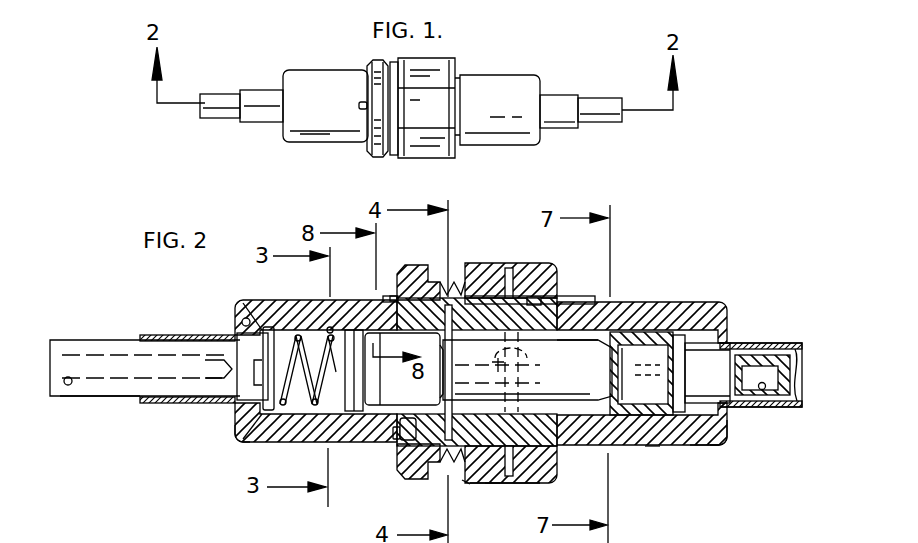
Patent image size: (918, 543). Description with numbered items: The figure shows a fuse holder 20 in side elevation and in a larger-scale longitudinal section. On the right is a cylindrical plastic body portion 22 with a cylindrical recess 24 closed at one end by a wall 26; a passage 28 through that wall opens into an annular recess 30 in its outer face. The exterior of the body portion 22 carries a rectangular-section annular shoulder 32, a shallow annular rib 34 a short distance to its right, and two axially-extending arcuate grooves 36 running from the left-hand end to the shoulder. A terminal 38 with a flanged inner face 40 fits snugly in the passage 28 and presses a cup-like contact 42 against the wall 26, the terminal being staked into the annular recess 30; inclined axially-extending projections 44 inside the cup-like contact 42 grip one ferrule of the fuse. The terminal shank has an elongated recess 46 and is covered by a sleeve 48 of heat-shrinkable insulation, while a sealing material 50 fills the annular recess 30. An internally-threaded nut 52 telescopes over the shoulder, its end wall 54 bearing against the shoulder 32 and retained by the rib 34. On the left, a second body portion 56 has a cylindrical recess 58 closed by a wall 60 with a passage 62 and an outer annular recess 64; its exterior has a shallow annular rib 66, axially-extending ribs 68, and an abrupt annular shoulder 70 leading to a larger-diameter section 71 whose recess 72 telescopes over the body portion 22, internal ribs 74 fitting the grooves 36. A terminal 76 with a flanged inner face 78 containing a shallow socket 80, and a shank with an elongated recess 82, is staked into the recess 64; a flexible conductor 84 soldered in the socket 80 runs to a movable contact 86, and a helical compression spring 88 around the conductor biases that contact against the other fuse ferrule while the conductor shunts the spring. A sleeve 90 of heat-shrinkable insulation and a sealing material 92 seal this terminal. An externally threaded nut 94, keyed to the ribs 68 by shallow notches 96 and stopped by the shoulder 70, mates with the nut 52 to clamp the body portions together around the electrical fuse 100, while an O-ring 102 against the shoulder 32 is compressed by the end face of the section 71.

In FIG. 1, the fuse holder 20 is at (498, 74).
In FIG. 2, the fuse holder 20 is at (672, 294).
In FIG. 1, the body portion 22 is at (511, 145).
In FIG. 2, the body portion 22 is at (712, 304).
In FIG. 2, the cylindrical recess 24 is at (588, 447).
In FIG. 2, the wall 26 is at (695, 447).
In FIG. 2, the passage 28 is at (729, 353).
In FIG. 2, the annular recess 30 is at (724, 440).
In FIG. 2, the annular shoulder 32 is at (498, 484).
In FIG. 1, the annular rib 34 is at (458, 100).
In FIG. 2, the annular rib 34 is at (565, 303).
In FIG. 2, the arcuate grooves 36 is at (514, 358).
In FIG. 1, the terminal 38 is at (616, 122).
In FIG. 2, the terminal 38 is at (707, 373).
In FIG. 2, the flanged inner face 40 is at (678, 448).
In FIG. 2, the cup-like contact 42 is at (625, 418).
In FIG. 2, the axially-extending projections 44 is at (652, 447).
In FIG. 2, the elongated recess 46 is at (766, 390).
In FIG. 1, the sleeve of heat-shrinkable insulation 48 is at (566, 95).
In FIG. 2, the sleeve of heat-shrinkable insulation 48 is at (800, 343).
In FIG. 2, the sealing material 50 is at (729, 350).
In FIG. 1, the internally-threaded nut 52 is at (420, 158).
In FIG. 2, the internally-threaded nut 52 is at (541, 265).
In FIG. 2, the end wall 54 is at (573, 298).
In FIG. 1, the body portion 56 is at (298, 136).
In FIG. 2, the body portion 56 is at (242, 446).
In FIG. 2, the cylindrical recess 58 is at (348, 330).
In FIG. 2, the wall 60 is at (238, 432).
In FIG. 2, the passage 62 is at (260, 308).
In FIG. 2, the annular recess 64 is at (240, 320).
In FIG. 1, the annular rib 66 is at (373, 62).
In FIG. 2, the annular rib 66 is at (398, 446).
In FIG. 1, the axially-extending ribs 68 is at (359, 105).
In FIG. 2, the axially-extending ribs 68 is at (393, 298).
In FIG. 2, the annular shoulder 70 is at (397, 478).
In FIG. 2, the larger-diameter section 71 is at (468, 485).
In FIG. 2, the larger-diameter cylindrical recess 72 is at (479, 265).
In FIG. 2, the axially-extending ribs 74 is at (527, 378).
In FIG. 1, the terminal 76 is at (208, 120).
In FIG. 2, the terminal 76 is at (252, 366).
In FIG. 2, the flanged inner face 78 is at (268, 415).
In FIG. 2, the shallow socket 80 is at (222, 370).
In FIG. 2, the elongated recess 82 is at (70, 386).
In FIG. 2, the flexible conductor 84 is at (308, 420).
In FIG. 2, the movable contact 86 is at (351, 415).
In FIG. 2, the helical compression spring 88 is at (328, 327).
In FIG. 1, the sleeve of heat-shrinkable insulation 90 is at (250, 90).
In FIG. 2, the sleeve of heat-shrinkable insulation 90 is at (160, 335).
In FIG. 2, the sealing material 92 is at (235, 413).
In FIG. 1, the externally threaded nut 94 is at (376, 155).
In FIG. 2, the externally threaded nut 94 is at (424, 268).
In FIG. 2, the shallow notches 96 is at (404, 296).
In FIG. 2, the electrical fuse 100 is at (581, 352).
In FIG. 2, the O-ring 102 is at (494, 485).